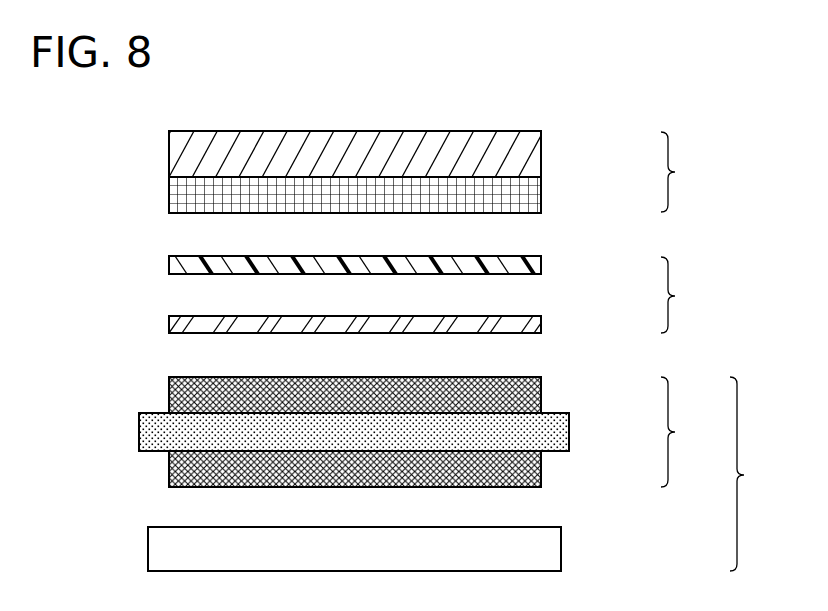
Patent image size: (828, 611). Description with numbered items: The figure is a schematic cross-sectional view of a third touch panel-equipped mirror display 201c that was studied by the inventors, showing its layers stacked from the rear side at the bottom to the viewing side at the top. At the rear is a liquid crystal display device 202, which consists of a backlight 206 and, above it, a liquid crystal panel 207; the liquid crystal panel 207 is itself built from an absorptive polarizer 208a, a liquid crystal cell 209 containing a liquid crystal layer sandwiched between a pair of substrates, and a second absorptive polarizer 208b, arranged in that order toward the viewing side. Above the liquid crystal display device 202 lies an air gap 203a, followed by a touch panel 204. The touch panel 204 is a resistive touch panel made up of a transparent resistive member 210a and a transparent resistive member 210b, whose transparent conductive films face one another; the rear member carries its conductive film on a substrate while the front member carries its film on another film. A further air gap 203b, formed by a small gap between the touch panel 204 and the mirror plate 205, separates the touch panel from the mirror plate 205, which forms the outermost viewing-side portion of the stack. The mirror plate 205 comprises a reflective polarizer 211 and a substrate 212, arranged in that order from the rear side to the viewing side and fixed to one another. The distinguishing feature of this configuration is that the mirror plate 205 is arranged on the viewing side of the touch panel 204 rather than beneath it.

The touch panel-equipped mirror display 201c is at (147, 115).
The liquid crystal display device 202 is at (761, 474).
The air gap 203a is at (527, 355).
The air gap 203b is at (527, 233).
The touch panel 204 is at (694, 295).
The mirror plate 205 is at (694, 172).
The backlight 206 is at (548, 550).
The liquid crystal panel 207 is at (695, 432).
The absorptive polarizer 208a is at (530, 467).
The absorptive polarizer 208b is at (530, 392).
The liquid crystal cell 209 is at (560, 432).
The transparent resistive member 210a is at (530, 325).
The transparent resistive member 210b is at (530, 264).
The reflective polarizer 211 is at (527, 194).
The substrate 212 is at (527, 153).